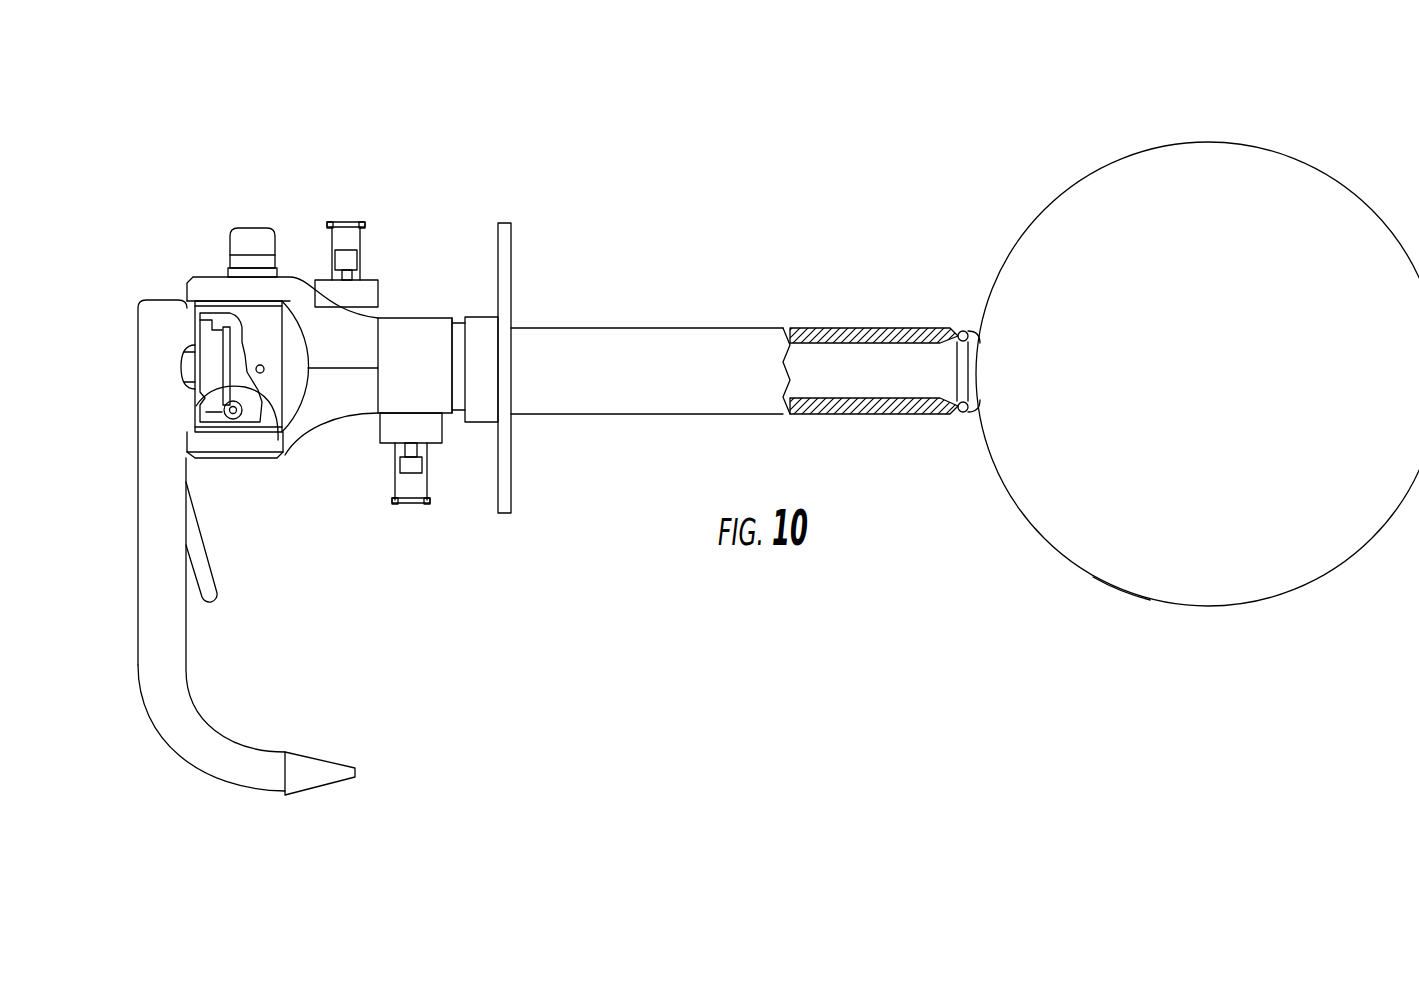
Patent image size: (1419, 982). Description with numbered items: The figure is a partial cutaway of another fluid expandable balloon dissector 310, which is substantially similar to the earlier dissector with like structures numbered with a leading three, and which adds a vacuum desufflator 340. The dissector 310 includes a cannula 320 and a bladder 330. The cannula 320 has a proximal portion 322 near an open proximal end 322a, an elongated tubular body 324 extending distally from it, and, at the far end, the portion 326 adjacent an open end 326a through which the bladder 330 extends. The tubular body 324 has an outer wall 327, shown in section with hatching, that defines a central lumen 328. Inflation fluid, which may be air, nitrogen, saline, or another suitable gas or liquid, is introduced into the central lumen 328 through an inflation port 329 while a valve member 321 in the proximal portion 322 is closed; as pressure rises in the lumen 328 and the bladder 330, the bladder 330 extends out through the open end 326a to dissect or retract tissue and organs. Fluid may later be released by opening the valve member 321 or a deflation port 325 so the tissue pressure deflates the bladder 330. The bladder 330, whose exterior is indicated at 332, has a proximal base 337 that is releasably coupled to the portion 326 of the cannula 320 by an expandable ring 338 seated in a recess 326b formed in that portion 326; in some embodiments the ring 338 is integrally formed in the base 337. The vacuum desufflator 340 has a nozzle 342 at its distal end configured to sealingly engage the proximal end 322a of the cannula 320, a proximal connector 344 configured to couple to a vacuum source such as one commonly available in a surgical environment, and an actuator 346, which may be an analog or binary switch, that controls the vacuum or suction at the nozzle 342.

The fluid expandable balloon dissector 310 is at (783, 223).
The cannula 320 is at (636, 288).
The valve member 321 is at (278, 440).
The proximal portion 322 is at (497, 161).
The proximal end 322a is at (183, 356).
The elongated tubular body 324 is at (708, 343).
The deflation port 325 is at (366, 238).
The proximal portion 326 is at (1020, 215).
The distal end 326a is at (972, 363).
The recess 326b is at (943, 416).
The outer wall 327 is at (819, 331).
The central lumen 328 is at (888, 383).
The inflation port 329 is at (392, 478).
The bladder 330 is at (1284, 146).
The ball surface 332 is at (1092, 579).
The proximal base 337 is at (977, 350).
The expandable ring 338 is at (964, 416).
The vacuum desufflator 340 is at (221, 683).
The nozzle 342 is at (224, 424).
The proximal connector 344 is at (327, 762).
The actuator 346 is at (208, 553).